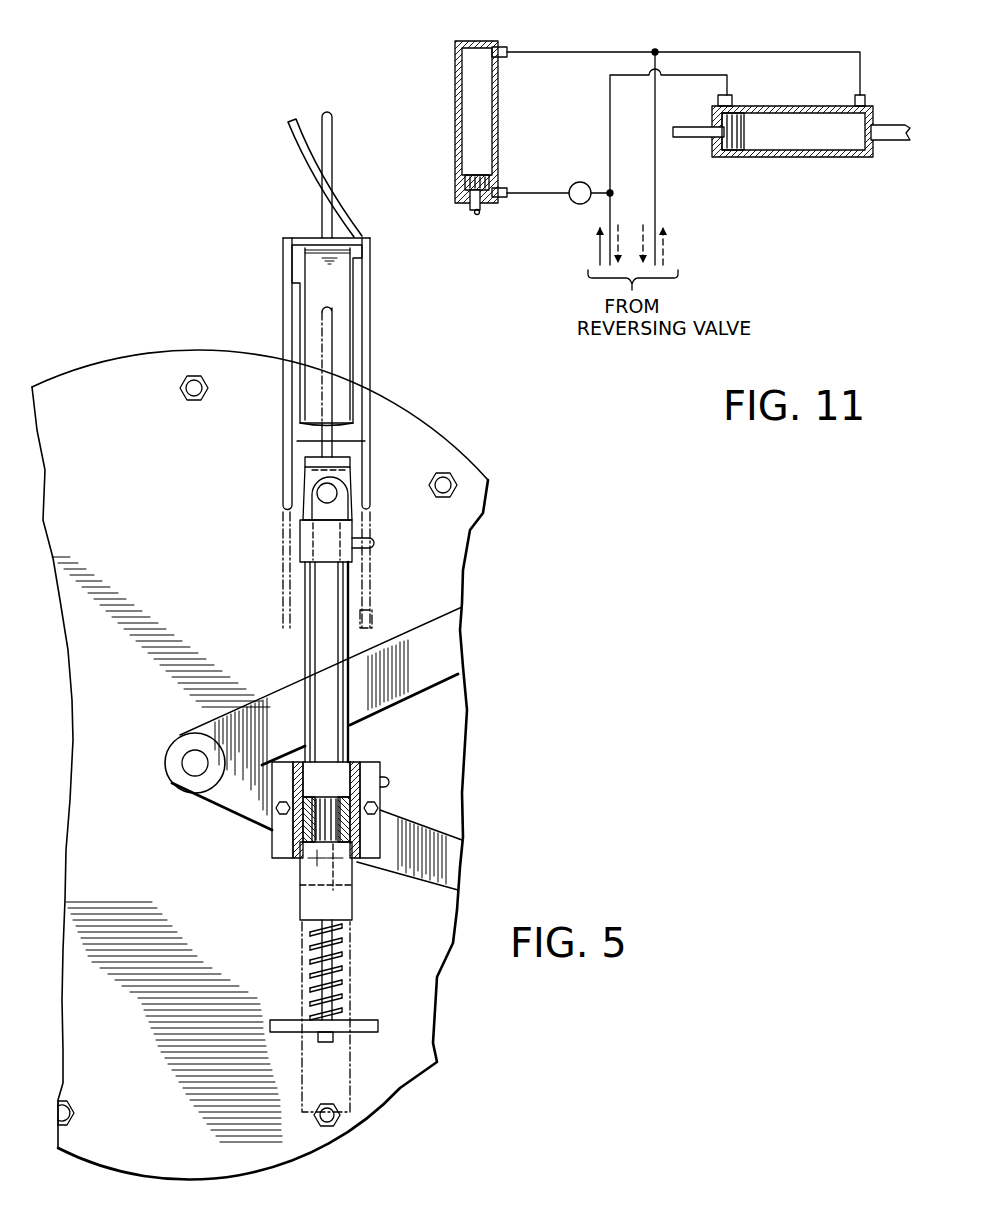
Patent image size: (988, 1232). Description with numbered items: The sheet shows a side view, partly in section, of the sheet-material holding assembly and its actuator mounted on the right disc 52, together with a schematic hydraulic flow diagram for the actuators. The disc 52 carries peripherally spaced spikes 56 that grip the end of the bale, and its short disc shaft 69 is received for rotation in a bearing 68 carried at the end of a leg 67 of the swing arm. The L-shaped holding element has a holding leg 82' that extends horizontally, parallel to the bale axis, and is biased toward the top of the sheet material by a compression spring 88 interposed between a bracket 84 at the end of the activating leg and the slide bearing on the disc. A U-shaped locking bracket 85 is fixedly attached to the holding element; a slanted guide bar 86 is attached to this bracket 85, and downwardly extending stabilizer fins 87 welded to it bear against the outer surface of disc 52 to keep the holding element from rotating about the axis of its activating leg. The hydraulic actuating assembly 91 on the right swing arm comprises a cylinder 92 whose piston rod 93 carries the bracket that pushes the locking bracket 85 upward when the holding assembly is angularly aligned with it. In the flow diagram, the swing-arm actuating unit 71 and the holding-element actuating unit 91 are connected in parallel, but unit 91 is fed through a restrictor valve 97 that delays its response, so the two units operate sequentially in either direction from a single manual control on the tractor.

In FIG. 5, the right disc 52 is at (437, 434).
In FIG. 5, the peripherally spaced spikes 56 is at (190, 380).
In FIG. 5, the legs of swing arms 67 is at (411, 813).
In FIG. 5, the bearings 68 is at (185, 748).
In FIG. 5, the disc shafts 69 is at (193, 766).
In FIG. 11, the actuating unit 71 is at (781, 166).
In FIG. 5, the holding leg 82' is at (354, 175).
In FIG. 5, the bracket 84 is at (366, 1031).
In FIG. 5, the U-shaped locking bracket 85 is at (310, 242).
In FIG. 5, the slanted guide bar 86 is at (349, 208).
In FIG. 5, the stabilizer fins 87 is at (287, 345).
In FIG. 5, the compression spring 88 is at (342, 977).
In FIG. 5, the hydraulic actuating assembly 91 is at (352, 609).
In FIG. 11, the hydraulic actuating assembly 91 is at (453, 90).
In FIG. 5, the cylinder 92 is at (312, 657).
In FIG. 5, the piston rod 93 is at (318, 876).
In FIG. 11, the piston rod 93 is at (479, 214).
In FIG. 11, the restrictor valve 97 is at (573, 185).